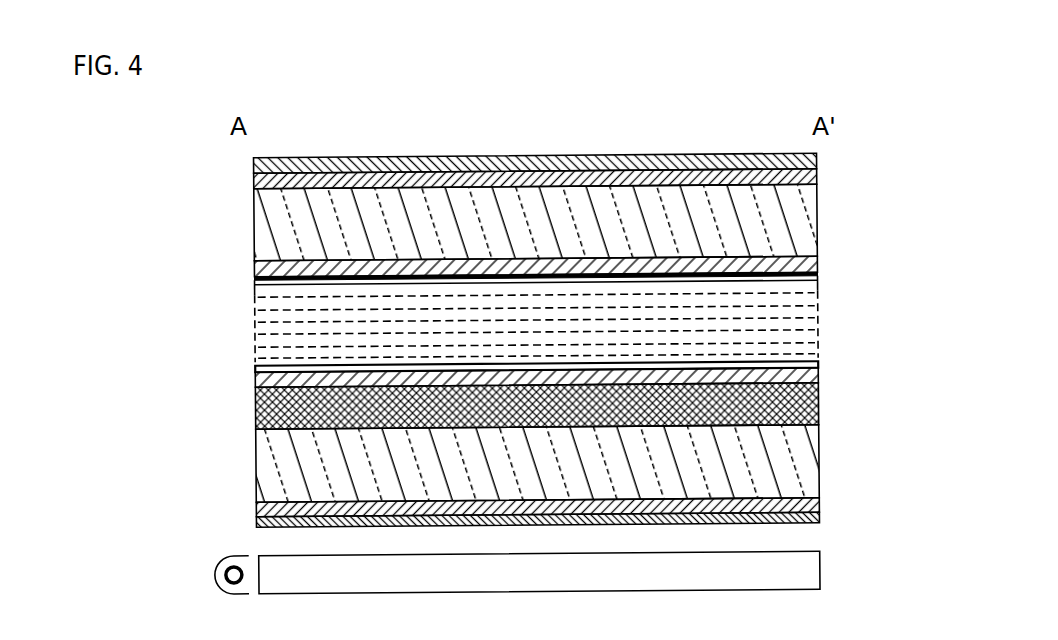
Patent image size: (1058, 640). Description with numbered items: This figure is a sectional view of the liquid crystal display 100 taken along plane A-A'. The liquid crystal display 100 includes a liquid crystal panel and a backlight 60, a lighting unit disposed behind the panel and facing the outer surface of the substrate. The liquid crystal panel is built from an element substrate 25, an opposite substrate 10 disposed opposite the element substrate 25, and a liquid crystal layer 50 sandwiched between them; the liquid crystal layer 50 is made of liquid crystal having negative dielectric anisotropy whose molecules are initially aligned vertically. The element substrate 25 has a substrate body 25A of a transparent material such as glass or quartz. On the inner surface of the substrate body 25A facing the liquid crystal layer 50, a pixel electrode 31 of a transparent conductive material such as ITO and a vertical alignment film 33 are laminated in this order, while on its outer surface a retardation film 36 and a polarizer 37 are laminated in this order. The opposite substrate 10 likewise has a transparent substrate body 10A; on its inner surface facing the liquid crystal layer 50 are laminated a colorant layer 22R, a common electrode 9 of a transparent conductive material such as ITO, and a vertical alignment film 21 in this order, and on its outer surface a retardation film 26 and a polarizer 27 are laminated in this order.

The liquid crystal display 100 is at (712, 137).
The polarizer 37 is at (818, 160).
The retardation film 36 is at (818, 177).
The substrate body 25A is at (810, 217).
The pixel electrode 31 is at (818, 263).
The vertical alignment film 33 is at (818, 278).
The liquid crystal layer 50 is at (813, 310).
The vertical alignment film 21 is at (818, 367).
The common electrode 9 is at (818, 378).
The colorant layer 22R is at (818, 395).
The substrate body 10A is at (818, 463).
The retardation film 26 is at (818, 505).
The polarizer 27 is at (818, 518).
The backlight 60 is at (808, 575).
The element substrate 25 is at (250, 158).
The opposite substrate 10 is at (250, 372).